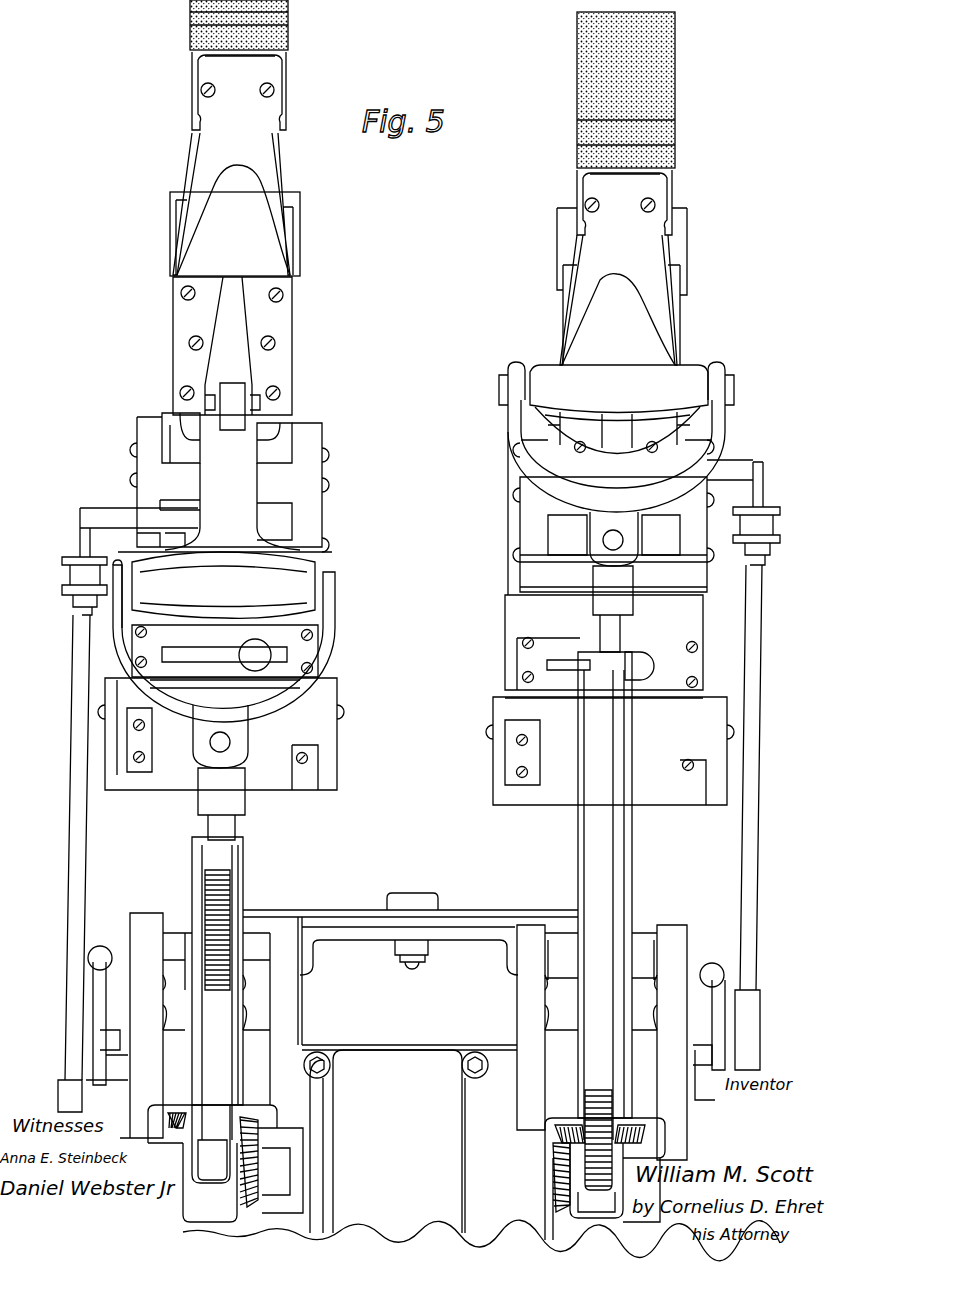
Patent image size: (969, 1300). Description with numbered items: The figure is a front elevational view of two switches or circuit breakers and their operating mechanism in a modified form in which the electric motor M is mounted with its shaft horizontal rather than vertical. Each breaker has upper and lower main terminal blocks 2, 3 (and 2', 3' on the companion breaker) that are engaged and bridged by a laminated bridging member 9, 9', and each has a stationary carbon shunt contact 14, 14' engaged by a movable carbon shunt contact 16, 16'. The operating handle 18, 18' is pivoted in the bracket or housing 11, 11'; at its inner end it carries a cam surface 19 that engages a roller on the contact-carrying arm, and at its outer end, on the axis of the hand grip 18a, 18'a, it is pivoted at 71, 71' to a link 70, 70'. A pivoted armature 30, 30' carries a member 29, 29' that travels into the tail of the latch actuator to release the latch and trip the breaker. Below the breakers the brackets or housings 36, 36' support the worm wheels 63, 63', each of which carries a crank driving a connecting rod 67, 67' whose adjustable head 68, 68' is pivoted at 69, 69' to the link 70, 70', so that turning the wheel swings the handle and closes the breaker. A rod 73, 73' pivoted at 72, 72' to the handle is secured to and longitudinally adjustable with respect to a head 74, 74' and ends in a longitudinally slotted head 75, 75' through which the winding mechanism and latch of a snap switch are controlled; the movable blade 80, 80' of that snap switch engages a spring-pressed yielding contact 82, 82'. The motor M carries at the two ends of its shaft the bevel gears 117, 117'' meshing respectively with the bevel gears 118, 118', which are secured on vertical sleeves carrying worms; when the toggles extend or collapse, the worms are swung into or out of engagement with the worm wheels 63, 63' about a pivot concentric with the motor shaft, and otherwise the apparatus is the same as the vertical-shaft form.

The stationary carbon shunt contact 14 is at (206, 25).
The movable carbon shunt contact 16 is at (274, 81).
The main terminal block 2 is at (248, 204).
The laminated bridging member 9 is at (254, 234).
The cam surface 19 is at (235, 390).
The main terminal block 3 is at (251, 426).
The bracket or housing 11 is at (246, 484).
The operating handle 18 is at (232, 506).
The hand grip 18a is at (223, 585).
The pivot 72 is at (122, 491).
The head 74 is at (62, 571).
The pivot 71 is at (77, 594).
The link 70 is at (204, 666).
The member 29 is at (164, 701).
The armature 30 is at (221, 749).
The pivot 69 is at (180, 795).
The adjustable head 68 is at (254, 804).
The connecting rod 67 is at (216, 988).
The worm wheel 63 is at (272, 930).
The bracket or housing 36 is at (218, 1023).
The rod 73 is at (55, 847).
The longitudinally slotted head 75 is at (47, 1090).
The yielding contact 82 is at (62, 947).
The movable blade 80 is at (76, 1023).
The bevel gear 118 is at (168, 1140).
The bevel gear 117 is at (270, 1184).
The electric motor M is at (396, 1141).
The stationary carbon shunt contact 14' is at (650, 90).
The movable carbon shunt contact 16' is at (652, 187).
The main terminal block 2' is at (604, 242).
The laminated bridging member 9' is at (646, 300).
The link 70' is at (593, 478).
The hand grip 18'a is at (619, 393).
The operating handle 18' is at (617, 447).
The pivot 71' is at (640, 390).
The main terminal block 3' is at (591, 425).
The bracket or housing 11' is at (594, 516).
The pivot 72' is at (757, 453).
The head 74' is at (778, 513).
The pivot 69' is at (670, 531).
The adjustable head 68' is at (665, 609).
The member 29' is at (571, 646).
The connecting rod 67' is at (614, 896).
The armature 30' is at (610, 768).
The rod 73' is at (770, 777).
The longitudinally slotted head 75' is at (768, 1030).
The yielding contact 82' is at (751, 962).
The movable blade 80' is at (747, 1040).
The bracket or housing 36' is at (629, 1037).
The worm wheel 63' is at (650, 1102).
The bevel gear 118' is at (655, 1135).
The bevel gear 117'' is at (541, 1191).